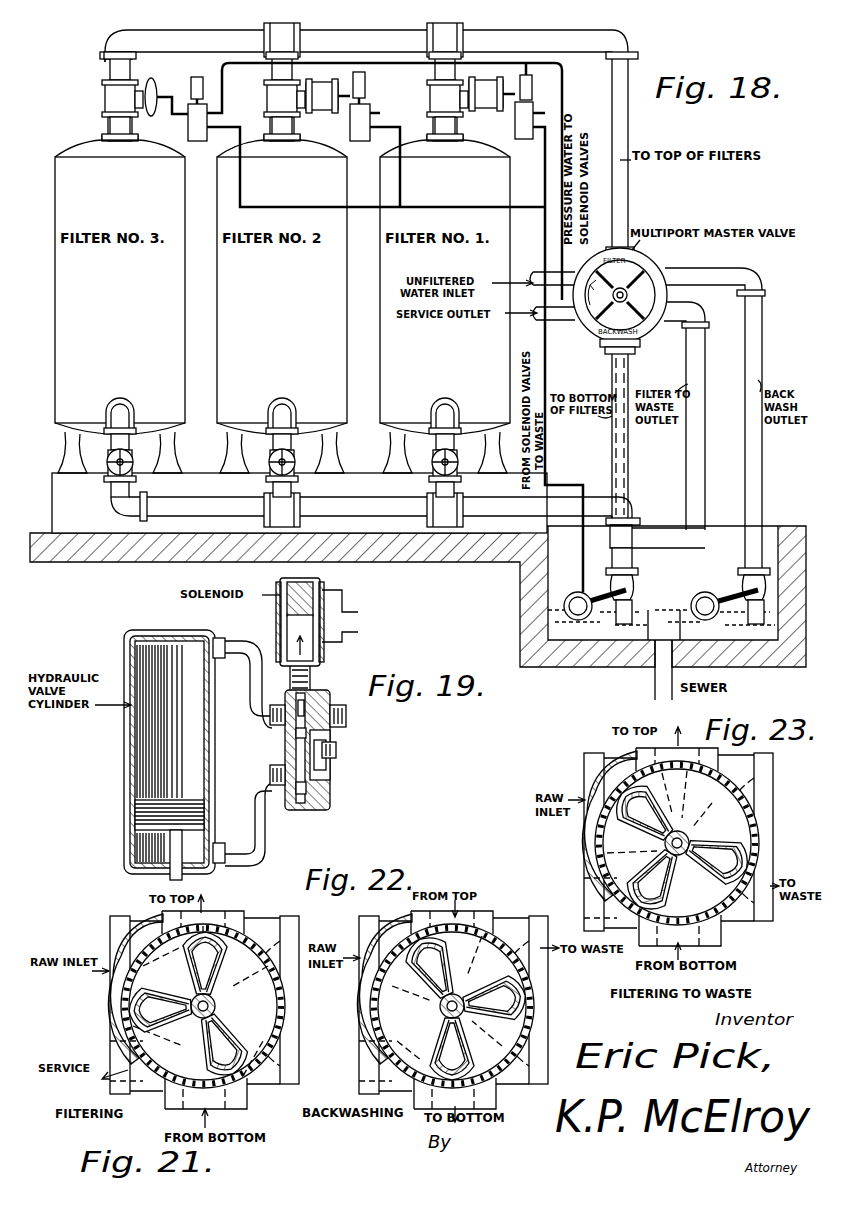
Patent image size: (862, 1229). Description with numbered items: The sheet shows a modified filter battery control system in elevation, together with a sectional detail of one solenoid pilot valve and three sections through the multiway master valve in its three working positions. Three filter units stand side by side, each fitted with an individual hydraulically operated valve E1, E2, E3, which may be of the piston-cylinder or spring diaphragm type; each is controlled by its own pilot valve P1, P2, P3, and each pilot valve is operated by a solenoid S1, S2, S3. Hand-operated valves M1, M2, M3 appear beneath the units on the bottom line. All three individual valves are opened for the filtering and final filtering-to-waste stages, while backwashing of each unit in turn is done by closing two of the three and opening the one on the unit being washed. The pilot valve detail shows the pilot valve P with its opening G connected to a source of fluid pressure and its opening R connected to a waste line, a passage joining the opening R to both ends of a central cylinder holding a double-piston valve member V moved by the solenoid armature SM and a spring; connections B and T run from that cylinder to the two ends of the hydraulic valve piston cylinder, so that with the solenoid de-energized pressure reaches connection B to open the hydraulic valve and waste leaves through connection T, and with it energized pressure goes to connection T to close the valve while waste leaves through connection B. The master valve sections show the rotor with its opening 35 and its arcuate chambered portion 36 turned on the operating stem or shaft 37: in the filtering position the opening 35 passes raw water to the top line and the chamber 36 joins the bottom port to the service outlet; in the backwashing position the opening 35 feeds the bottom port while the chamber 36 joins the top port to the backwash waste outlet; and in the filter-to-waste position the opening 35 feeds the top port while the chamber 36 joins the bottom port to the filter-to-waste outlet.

In FIG. 18, the individual valve E1 is at (465, 96).
In FIG. 18, the individual valve E2 is at (301, 96).
In FIG. 18, the individual valve E3 is at (129, 96).
In FIG. 18, the solenoid S1 is at (534, 87).
In FIG. 18, the solenoid S2 is at (359, 72).
In FIG. 18, the solenoid S3 is at (195, 80).
In FIG. 18, the pilot valve P1 is at (524, 139).
In FIG. 18, the pilot valve P2 is at (360, 141).
In FIG. 18, the pilot valve P3 is at (199, 141).
In FIG. 18, the manual valve, filter 1 M1 is at (452, 462).
In FIG. 18, the manual valve, filter 2 M2 is at (289, 462).
In FIG. 18, the manual valve, filter 3 M3 is at (127, 462).
In FIG. 19, the solenoid armature SM is at (317, 622).
In FIG. 19, the connection T is at (272, 706).
In FIG. 19, the connection B is at (275, 792).
In FIG. 19, the opening R is at (346, 716).
In FIG. 19, the opening G is at (336, 750).
In FIG. 19, the valve member V is at (338, 786).
In FIG. 19, the pilot valve P is at (300, 810).
In FIG. 21, the rotor opening 35 is at (204, 962).
In FIG. 22, the rotor opening 35 is at (452, 1049).
In FIG. 23, the rotor opening 35 is at (645, 814).
In FIG. 21, the arcuate chambered portion 36 is at (160, 1013).
In FIG. 22, the arcuate chambered portion 36 is at (495, 1000).
In FIG. 23, the arcuate chambered portion 36 is at (655, 880).
In FIG. 21, the operating stem or shaft 37 is at (220, 1036).
In FIG. 22, the operating stem or shaft 37 is at (448, 986).
In FIG. 23, the operating stem or shaft 37 is at (709, 856).